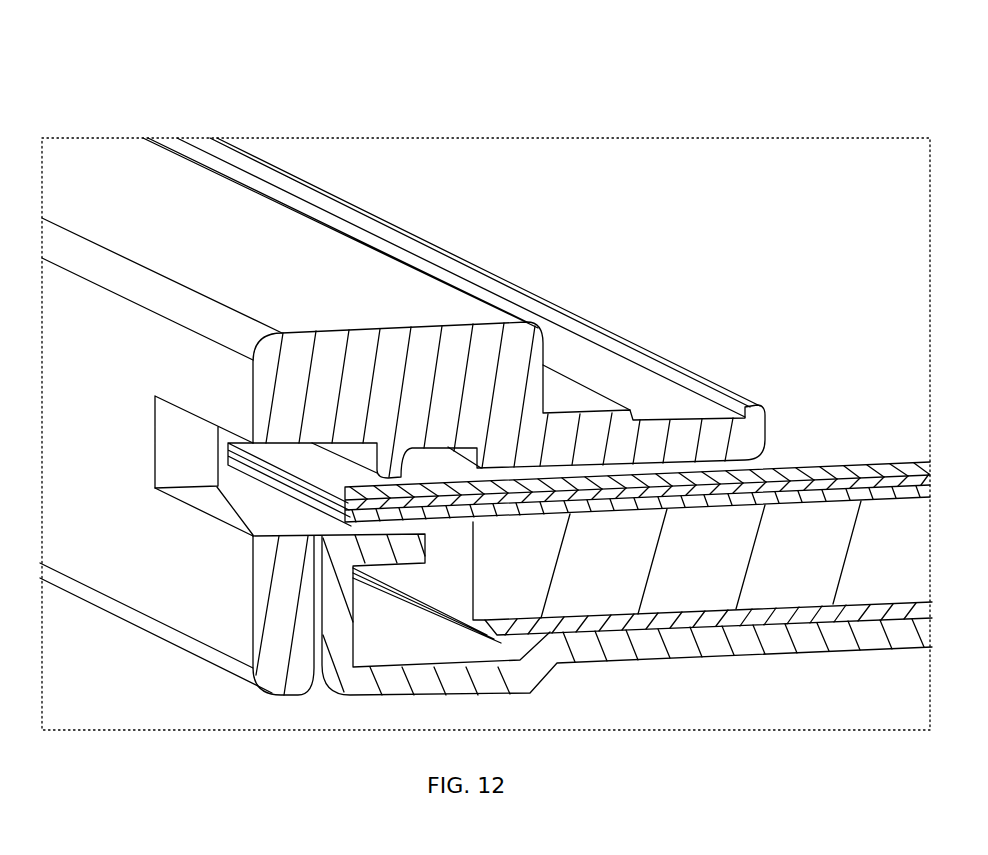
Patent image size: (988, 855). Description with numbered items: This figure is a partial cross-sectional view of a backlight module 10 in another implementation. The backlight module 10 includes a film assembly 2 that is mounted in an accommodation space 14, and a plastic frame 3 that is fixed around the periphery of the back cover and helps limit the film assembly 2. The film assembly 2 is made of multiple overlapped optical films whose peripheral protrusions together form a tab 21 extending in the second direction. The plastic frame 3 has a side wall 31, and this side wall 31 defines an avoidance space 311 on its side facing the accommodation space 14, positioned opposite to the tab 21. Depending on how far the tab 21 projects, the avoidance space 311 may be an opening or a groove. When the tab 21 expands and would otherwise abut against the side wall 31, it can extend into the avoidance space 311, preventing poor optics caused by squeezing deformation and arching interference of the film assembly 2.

The backlight module 10 is at (50, 42).
The film assembly 2 is at (830, 477).
The tab 21 is at (226, 446).
The plastic frame 3 is at (142, 632).
The side wall 31 is at (279, 657).
The avoidance space 311 is at (199, 482).
The accommodation space 14 is at (505, 640).